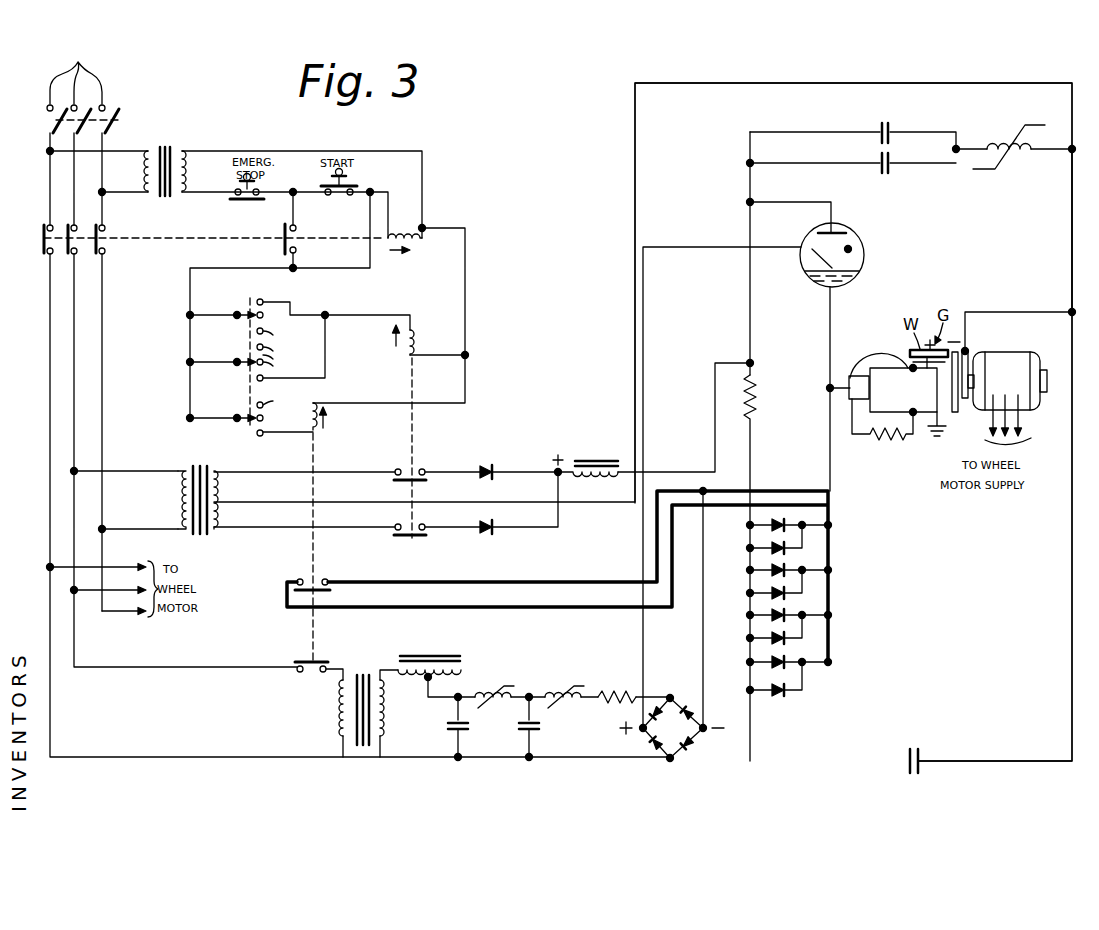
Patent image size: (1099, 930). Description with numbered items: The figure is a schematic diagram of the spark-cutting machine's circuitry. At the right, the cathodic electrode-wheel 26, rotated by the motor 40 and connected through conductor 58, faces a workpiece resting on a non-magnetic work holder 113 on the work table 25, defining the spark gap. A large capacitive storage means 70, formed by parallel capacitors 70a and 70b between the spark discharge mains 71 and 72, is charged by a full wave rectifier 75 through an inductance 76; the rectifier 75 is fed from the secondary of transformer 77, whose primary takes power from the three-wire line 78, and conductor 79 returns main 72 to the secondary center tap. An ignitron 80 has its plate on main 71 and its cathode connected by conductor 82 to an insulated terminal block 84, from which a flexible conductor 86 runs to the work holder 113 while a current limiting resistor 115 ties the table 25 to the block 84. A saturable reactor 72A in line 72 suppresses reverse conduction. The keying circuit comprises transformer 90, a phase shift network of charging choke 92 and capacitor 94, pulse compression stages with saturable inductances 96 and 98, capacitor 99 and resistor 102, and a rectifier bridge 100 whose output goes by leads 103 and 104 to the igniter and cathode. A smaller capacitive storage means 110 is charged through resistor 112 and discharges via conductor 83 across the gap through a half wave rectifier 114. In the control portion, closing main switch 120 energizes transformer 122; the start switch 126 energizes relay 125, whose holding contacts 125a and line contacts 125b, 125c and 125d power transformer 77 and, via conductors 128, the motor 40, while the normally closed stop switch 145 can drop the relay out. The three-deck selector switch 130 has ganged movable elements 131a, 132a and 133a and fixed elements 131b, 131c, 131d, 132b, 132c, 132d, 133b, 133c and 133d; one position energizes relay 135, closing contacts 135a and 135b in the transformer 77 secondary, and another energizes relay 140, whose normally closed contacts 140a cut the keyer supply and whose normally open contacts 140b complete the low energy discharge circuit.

The 3-wire line 78 is at (76, 80).
The main switch 120 is at (125, 119).
The transformer 122 is at (152, 212).
The normally closed switch 145 is at (238, 212).
The start switch 126 is at (340, 196).
The relay 125 is at (418, 250).
The holding contacts 125a is at (299, 233).
The power line contacts 125b is at (44, 240).
The power line contacts 125c is at (68, 254).
The power line contacts 125d is at (100, 253).
The three-position selector switch 130 is at (250, 308).
The movable element 131a is at (242, 318).
The fixed switch element 131b is at (263, 299).
The fixed switch element 131c is at (289, 330).
The fixed switch element 131d is at (290, 345).
The movable element 132a is at (243, 362).
The fixed switch element 132b is at (294, 358).
The fixed switch element 132c is at (294, 372).
The fixed switch element 132d is at (266, 380).
The movable element 133a is at (244, 422).
The fixed switch element 133b is at (288, 406).
The fixed switch element 133c is at (249, 406).
The fixed switch element 133d is at (256, 436).
The relay 135 is at (416, 320).
The relay 140 is at (324, 428).
The transformer 77 is at (199, 459).
The contacts 135a is at (405, 468).
The contacts 135b is at (397, 523).
The rectifier 75 is at (494, 442).
The inductance 76 is at (605, 434).
The normally open contacts 140b is at (325, 579).
The normally closed contacts 140a is at (324, 653).
The transformer 90 is at (360, 673).
The charging choke 92 is at (432, 654).
The saturable inductance 96 is at (491, 686).
The saturable inductance 98 is at (549, 686).
The resistor 102 is at (630, 690).
The capacitor 94 is at (469, 728).
The capacitor 99 is at (540, 732).
The rectifier bridge 100 is at (672, 728).
The lead 103 is at (644, 646).
The lead 104 is at (706, 641).
The half wave rectifier 114 is at (835, 577).
The capacitive storage means 110 is at (920, 742).
The conductor 79 is at (677, 92).
The capacitive storage means 70 is at (886, 124).
The capacitor 70a is at (892, 142).
The capacitor 70b is at (889, 176).
The spark discharge main 71 is at (749, 183).
The saturable reactor 72A is at (1010, 161).
The spark discharge main 72 is at (1071, 201).
The ignitron 80 is at (862, 235).
The conductor 82 is at (830, 333).
The conductor 83 is at (832, 488).
The resistor 112 is at (758, 396).
The flexible conductor 86 is at (877, 346).
The insulated terminal block 84 is at (845, 397).
The work holder 113 is at (926, 368).
The work table 25 is at (854, 414).
The current limiting resistor 115 is at (869, 446).
The electrode-wheel 26 is at (954, 413).
The motor 40 is at (1000, 351).
The conductor 58 is at (1044, 311).
The conductors 128 is at (130, 564).